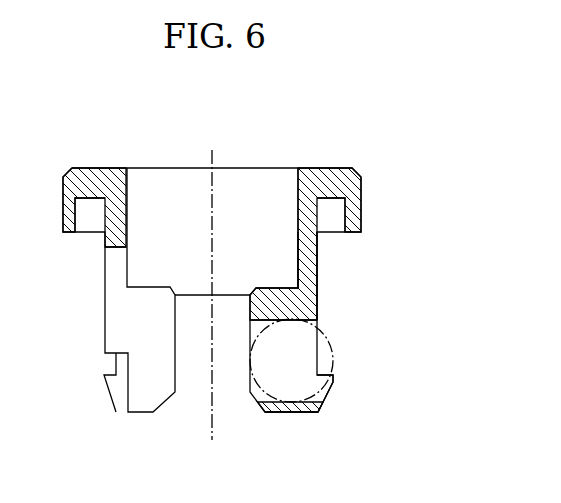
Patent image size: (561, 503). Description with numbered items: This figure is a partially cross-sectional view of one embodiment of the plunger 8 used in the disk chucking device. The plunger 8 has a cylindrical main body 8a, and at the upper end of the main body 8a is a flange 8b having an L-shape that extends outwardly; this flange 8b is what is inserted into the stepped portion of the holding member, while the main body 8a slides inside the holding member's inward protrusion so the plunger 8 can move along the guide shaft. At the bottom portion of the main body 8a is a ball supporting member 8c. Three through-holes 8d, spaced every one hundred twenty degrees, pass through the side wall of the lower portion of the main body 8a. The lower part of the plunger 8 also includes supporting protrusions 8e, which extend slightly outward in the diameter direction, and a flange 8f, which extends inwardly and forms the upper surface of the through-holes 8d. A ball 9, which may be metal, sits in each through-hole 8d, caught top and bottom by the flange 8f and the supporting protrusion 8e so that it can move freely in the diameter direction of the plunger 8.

The plunger 8 is at (350, 151).
The cylindrical main body 8a is at (317, 268).
The flange 8b is at (361, 192).
The ball supporting member 8c is at (328, 413).
The through-holes 8d is at (333, 390).
The supporting protrusions 8e is at (298, 410).
The flange 8f is at (310, 297).
The ball 9 is at (320, 328).